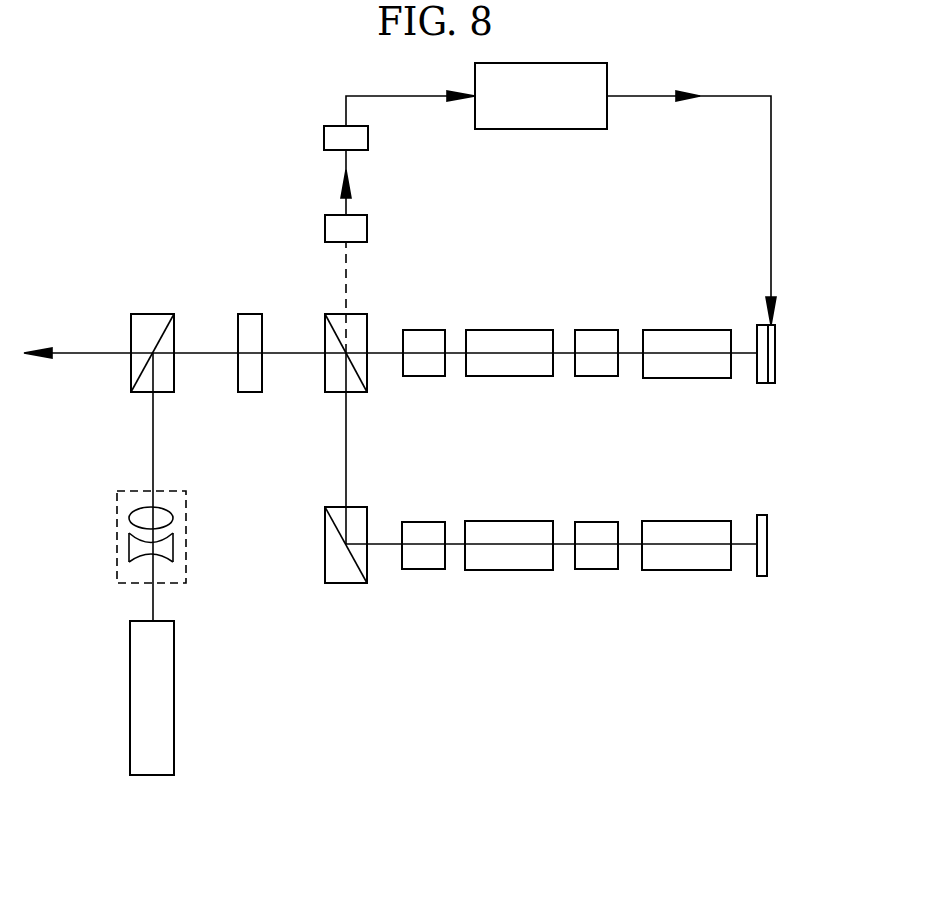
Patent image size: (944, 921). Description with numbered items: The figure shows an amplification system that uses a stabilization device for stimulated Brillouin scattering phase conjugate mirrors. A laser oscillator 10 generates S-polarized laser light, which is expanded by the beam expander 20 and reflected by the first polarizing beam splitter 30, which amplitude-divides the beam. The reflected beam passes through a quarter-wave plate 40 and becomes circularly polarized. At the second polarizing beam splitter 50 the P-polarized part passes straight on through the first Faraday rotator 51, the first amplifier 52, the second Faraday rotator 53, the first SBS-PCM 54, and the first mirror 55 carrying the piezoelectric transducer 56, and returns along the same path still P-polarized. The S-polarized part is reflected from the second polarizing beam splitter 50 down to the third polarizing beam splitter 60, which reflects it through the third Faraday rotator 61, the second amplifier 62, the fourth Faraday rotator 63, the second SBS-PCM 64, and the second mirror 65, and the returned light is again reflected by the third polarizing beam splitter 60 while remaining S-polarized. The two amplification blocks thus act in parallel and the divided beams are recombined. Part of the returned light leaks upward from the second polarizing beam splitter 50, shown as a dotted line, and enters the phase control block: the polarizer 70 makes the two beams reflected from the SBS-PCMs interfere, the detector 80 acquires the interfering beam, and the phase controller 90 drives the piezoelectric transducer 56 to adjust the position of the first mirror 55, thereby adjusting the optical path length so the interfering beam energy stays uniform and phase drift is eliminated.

The laser oscillator 10 is at (174, 695).
The beam expander 20 is at (186, 533).
The first polarizing beam splitter 30 is at (151, 314).
The quarter-wave plate 40 is at (247, 314).
The second polarizing beam splitter 50 is at (367, 316).
The first Faraday rotator 51 is at (420, 376).
The first amplifier 52 is at (519, 376).
The second Faraday rotator 53 is at (597, 376).
The first SBS-PCM 54 is at (682, 378).
The first mirror 55 is at (765, 383).
The piezoelectric transducer 56 is at (775, 368).
The third polarizing beam splitter 60 is at (345, 583).
The third Faraday rotator 61 is at (423, 569).
The second amplifier 62 is at (519, 570).
The fourth Faraday rotator 63 is at (597, 569).
The second SBS-PCM 64 is at (683, 570).
The second mirror 65 is at (762, 576).
The polarizer 70 is at (368, 226).
The detector 80 is at (368, 137).
The phase controller 90 is at (552, 129).